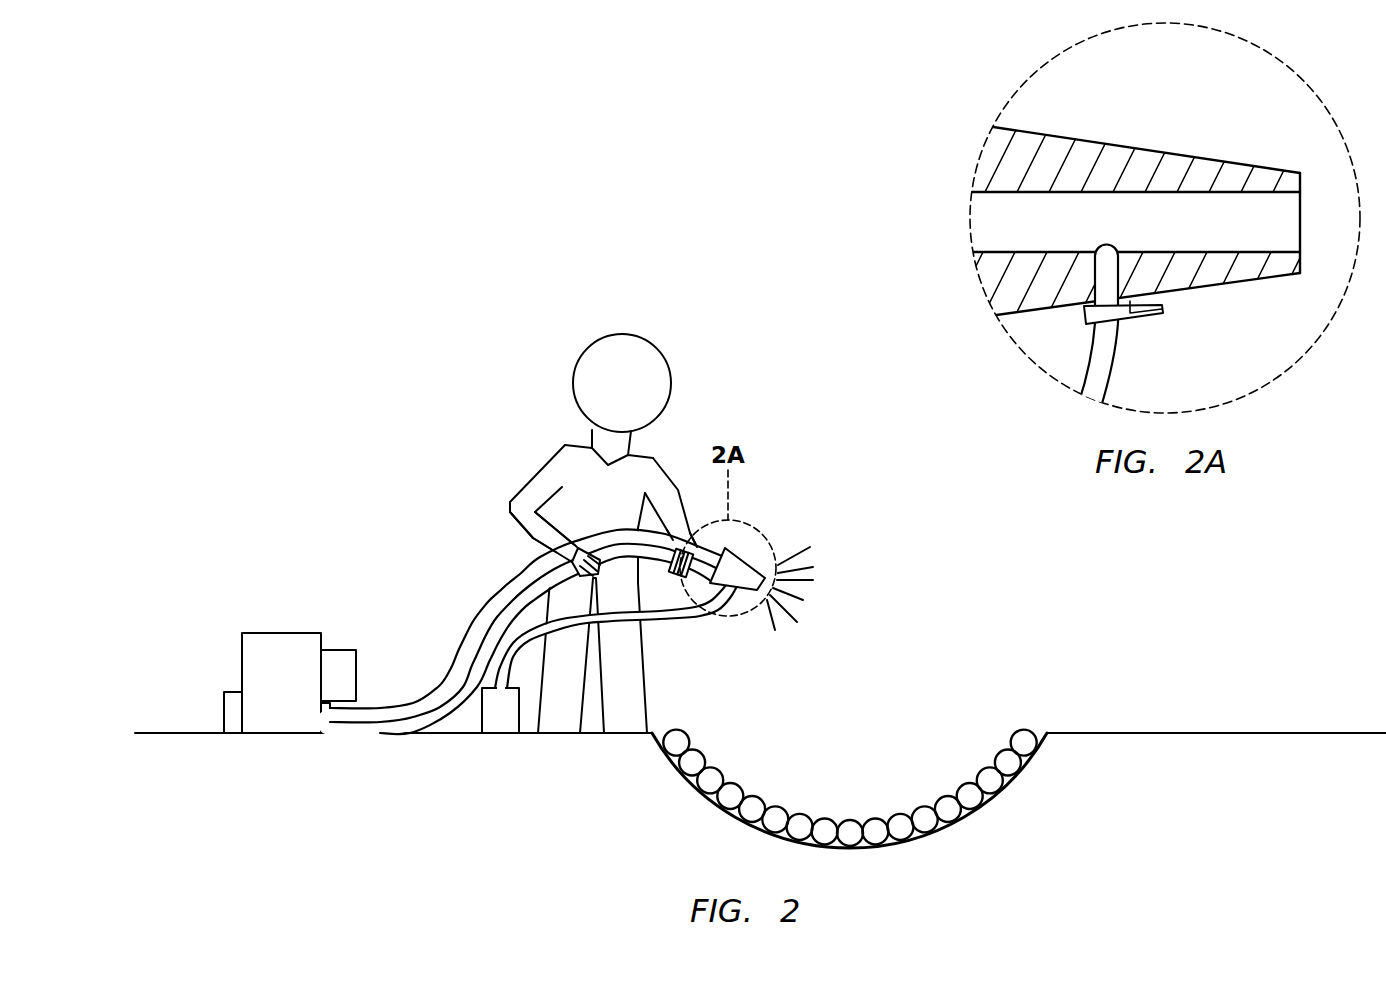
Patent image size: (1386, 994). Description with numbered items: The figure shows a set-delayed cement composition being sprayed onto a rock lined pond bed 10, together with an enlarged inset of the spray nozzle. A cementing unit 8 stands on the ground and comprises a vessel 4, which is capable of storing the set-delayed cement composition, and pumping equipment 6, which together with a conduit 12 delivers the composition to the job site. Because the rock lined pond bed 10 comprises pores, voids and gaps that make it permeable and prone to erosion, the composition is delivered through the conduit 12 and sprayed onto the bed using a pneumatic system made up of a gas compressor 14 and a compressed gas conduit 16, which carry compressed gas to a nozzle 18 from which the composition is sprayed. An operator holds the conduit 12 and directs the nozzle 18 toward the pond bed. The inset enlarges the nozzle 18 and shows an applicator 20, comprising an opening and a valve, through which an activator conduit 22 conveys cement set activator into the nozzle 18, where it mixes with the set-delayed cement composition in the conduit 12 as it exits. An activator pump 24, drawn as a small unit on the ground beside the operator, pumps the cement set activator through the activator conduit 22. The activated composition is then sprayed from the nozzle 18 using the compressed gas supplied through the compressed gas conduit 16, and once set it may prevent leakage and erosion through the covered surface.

In FIG. 2, the vessel 4 is at (283, 645).
In FIG. 2, the pumping equipment 6 is at (230, 710).
In FIG. 2, the cementing unit 8 is at (218, 612).
In FIG. 2, the rock lined pond bed 10 is at (725, 800).
In FIG. 2, the conduit 12 is at (489, 612).
In FIG. 2, the gas compressor 14 is at (348, 670).
In FIG. 2, the compressed gas conduit 16 is at (526, 631).
In FIG. 2, the nozzle 18 is at (738, 568).
In FIG. 2A, the nozzle 18 is at (1172, 148).
In FIG. 2A, the applicator 20 is at (1126, 303).
In FIG. 2, the activator conduit 22 is at (672, 613).
In FIG. 2A, the activator conduit 22 is at (1120, 347).
In FIG. 2, the activator pump 24 is at (498, 727).